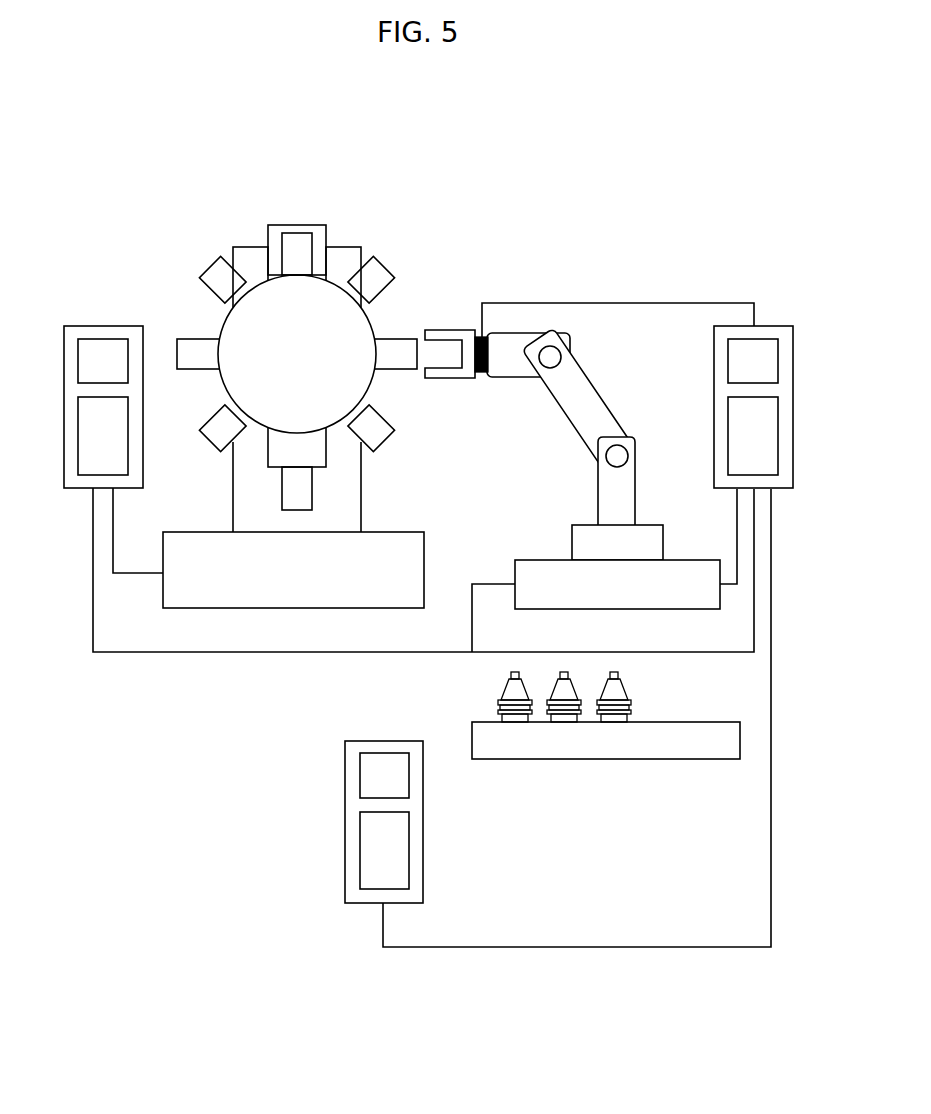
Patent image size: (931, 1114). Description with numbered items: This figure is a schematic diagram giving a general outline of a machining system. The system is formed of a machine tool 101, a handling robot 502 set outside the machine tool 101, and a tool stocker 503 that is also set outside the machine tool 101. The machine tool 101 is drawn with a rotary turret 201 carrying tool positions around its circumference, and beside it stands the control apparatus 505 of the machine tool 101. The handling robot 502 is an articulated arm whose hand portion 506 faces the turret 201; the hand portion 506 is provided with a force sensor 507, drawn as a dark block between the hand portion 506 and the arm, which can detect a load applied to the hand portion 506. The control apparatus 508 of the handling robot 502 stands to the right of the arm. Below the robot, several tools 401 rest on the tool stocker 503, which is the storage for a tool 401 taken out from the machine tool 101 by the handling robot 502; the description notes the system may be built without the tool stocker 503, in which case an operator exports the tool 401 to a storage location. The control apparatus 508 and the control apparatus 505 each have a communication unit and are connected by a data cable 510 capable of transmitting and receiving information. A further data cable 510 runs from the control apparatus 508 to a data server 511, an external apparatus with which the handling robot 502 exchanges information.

The machine tool 101 is at (423, 194).
The turret 201 is at (362, 330).
The handling robot 502 is at (803, 194).
The control apparatus of the machine tool 505 is at (102, 330).
The hand portion 506 is at (447, 380).
The force sensor 507 is at (485, 377).
The control apparatus of the handling robot 508 is at (765, 333).
The tool 401 is at (508, 697).
The tool stocker 503 is at (606, 752).
The data cable 510 is at (612, 303).
The data server 511 is at (350, 828).